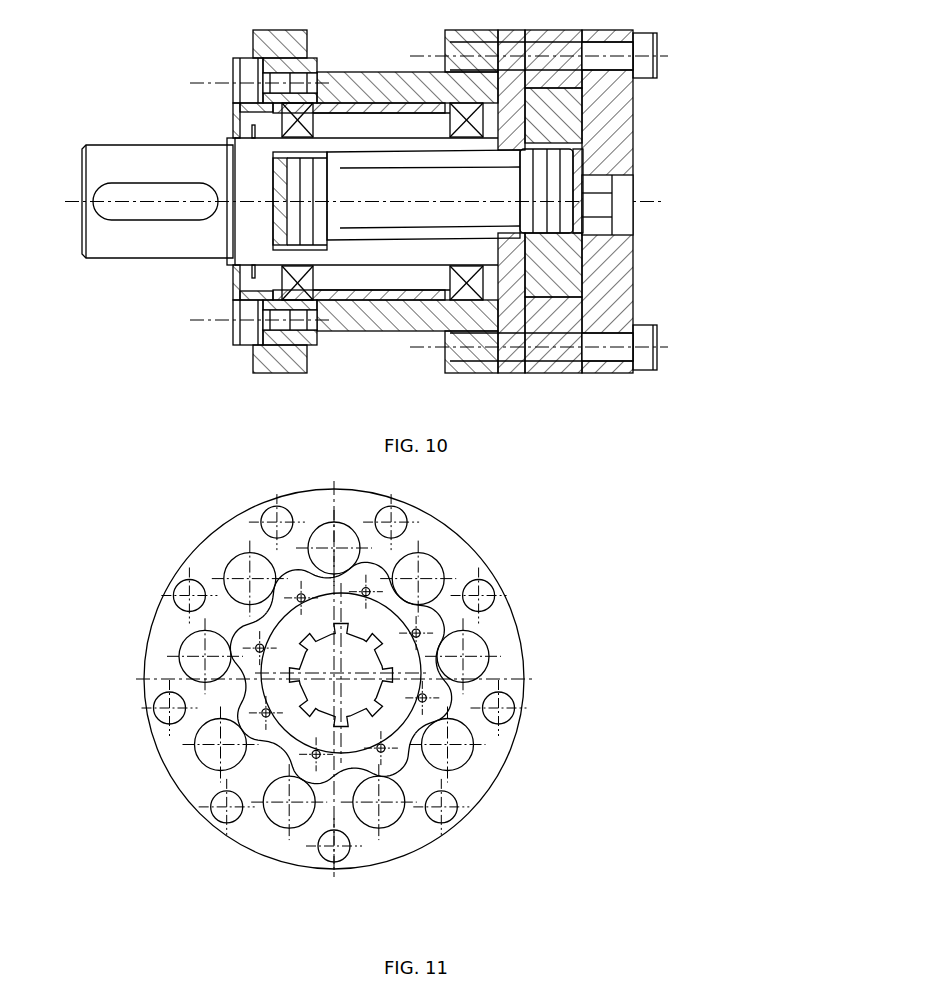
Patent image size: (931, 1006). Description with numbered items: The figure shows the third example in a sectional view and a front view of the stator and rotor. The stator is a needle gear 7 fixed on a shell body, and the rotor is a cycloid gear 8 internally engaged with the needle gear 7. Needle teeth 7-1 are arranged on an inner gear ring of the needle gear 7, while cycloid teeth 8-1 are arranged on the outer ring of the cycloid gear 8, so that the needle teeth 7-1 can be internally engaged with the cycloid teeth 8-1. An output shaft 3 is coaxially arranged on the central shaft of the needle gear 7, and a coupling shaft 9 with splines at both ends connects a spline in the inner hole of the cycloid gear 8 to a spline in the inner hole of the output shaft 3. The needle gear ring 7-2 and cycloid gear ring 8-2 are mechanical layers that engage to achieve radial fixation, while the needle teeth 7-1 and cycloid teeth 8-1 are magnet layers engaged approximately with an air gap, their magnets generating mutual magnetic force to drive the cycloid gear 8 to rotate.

In FIG. 10, the output shaft 3 is at (128, 237).
In FIG. 10, the needle gear 7 is at (605, 201).
In FIG. 11, the needle teeth 7-1 is at (404, 675).
In FIG. 11, the needle gear ring 7-2 is at (373, 681).
In FIG. 10, the cycloid gear 8 is at (655, 192).
In FIG. 11, the cycloid teeth 8-1 is at (465, 674).
In FIG. 11, the cycloid gear ring 8-2 is at (415, 713).
In FIG. 10, the coupling shaft 9 is at (536, 172).